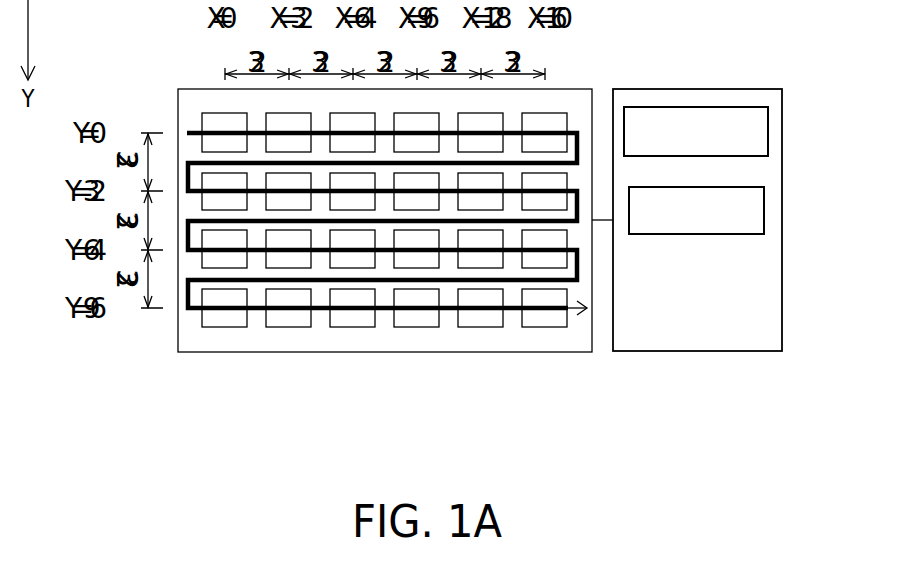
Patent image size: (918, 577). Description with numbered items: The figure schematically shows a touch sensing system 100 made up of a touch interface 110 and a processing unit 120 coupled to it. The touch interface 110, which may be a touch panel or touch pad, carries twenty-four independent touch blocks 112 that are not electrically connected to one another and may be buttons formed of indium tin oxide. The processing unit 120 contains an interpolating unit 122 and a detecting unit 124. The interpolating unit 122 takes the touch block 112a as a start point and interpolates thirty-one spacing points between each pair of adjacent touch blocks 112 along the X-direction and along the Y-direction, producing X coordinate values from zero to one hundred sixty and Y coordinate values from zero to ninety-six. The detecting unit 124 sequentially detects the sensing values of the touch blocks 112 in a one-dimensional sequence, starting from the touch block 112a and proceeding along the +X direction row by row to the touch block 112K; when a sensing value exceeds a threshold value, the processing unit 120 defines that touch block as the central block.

The touch sensing system 100 is at (635, 441).
The touch interface 110 is at (502, 352).
The touch blocks 112 is at (353, 327).
The touch block 112a is at (208, 113).
The touch block 112K is at (553, 327).
The processing unit 120 is at (782, 286).
The interpolating unit 122 is at (768, 128).
The detecting unit 124 is at (764, 208).